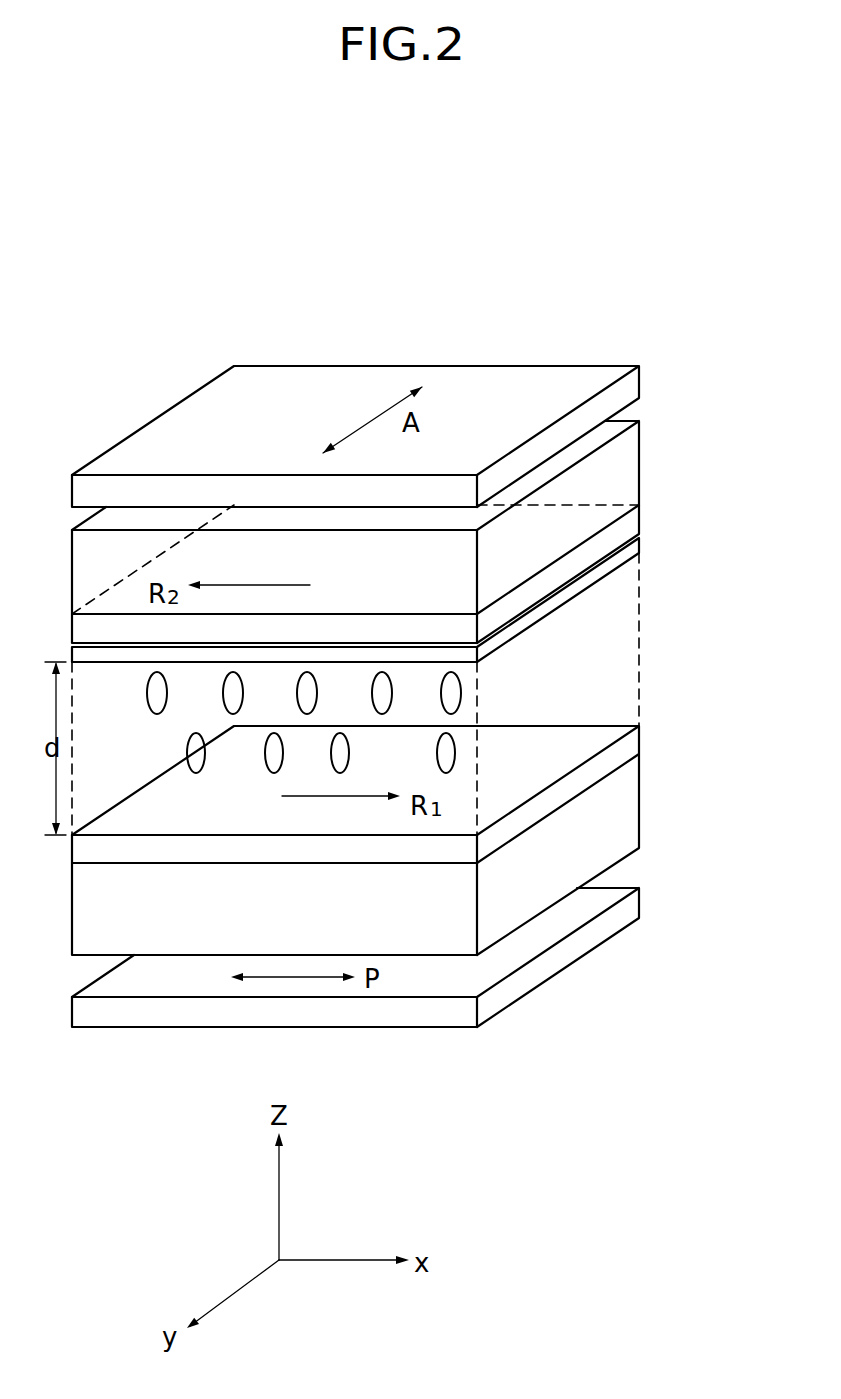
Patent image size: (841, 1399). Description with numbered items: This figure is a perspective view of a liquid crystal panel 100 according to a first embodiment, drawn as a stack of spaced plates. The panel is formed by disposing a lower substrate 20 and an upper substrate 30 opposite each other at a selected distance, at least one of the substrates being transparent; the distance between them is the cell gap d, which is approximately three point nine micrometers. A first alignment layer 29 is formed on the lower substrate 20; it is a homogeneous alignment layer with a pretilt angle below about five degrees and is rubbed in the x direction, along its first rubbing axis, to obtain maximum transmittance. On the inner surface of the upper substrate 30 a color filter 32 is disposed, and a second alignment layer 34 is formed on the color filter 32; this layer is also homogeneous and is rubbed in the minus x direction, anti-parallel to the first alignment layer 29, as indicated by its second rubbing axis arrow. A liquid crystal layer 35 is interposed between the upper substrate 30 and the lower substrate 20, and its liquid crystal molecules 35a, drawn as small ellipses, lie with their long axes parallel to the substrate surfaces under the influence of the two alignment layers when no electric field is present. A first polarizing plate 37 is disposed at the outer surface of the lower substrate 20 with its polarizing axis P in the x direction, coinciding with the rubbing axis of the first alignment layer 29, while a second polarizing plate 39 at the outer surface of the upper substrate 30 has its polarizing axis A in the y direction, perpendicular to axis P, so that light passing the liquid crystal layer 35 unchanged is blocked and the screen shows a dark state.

The liquid crystal panel 100 is at (657, 351).
The second polarizing plate 39 is at (639, 383).
The upper substrate 30 is at (639, 458).
The color filter 32 is at (639, 512).
The second alignment layer 34 is at (639, 552).
The liquid crystal layer 35 is at (632, 642).
The liquid crystal molecules 35a is at (461, 692).
The first alignment layer 29 is at (639, 744).
The lower substrate 20 is at (639, 812).
The first polarizing plate 37 is at (639, 905).